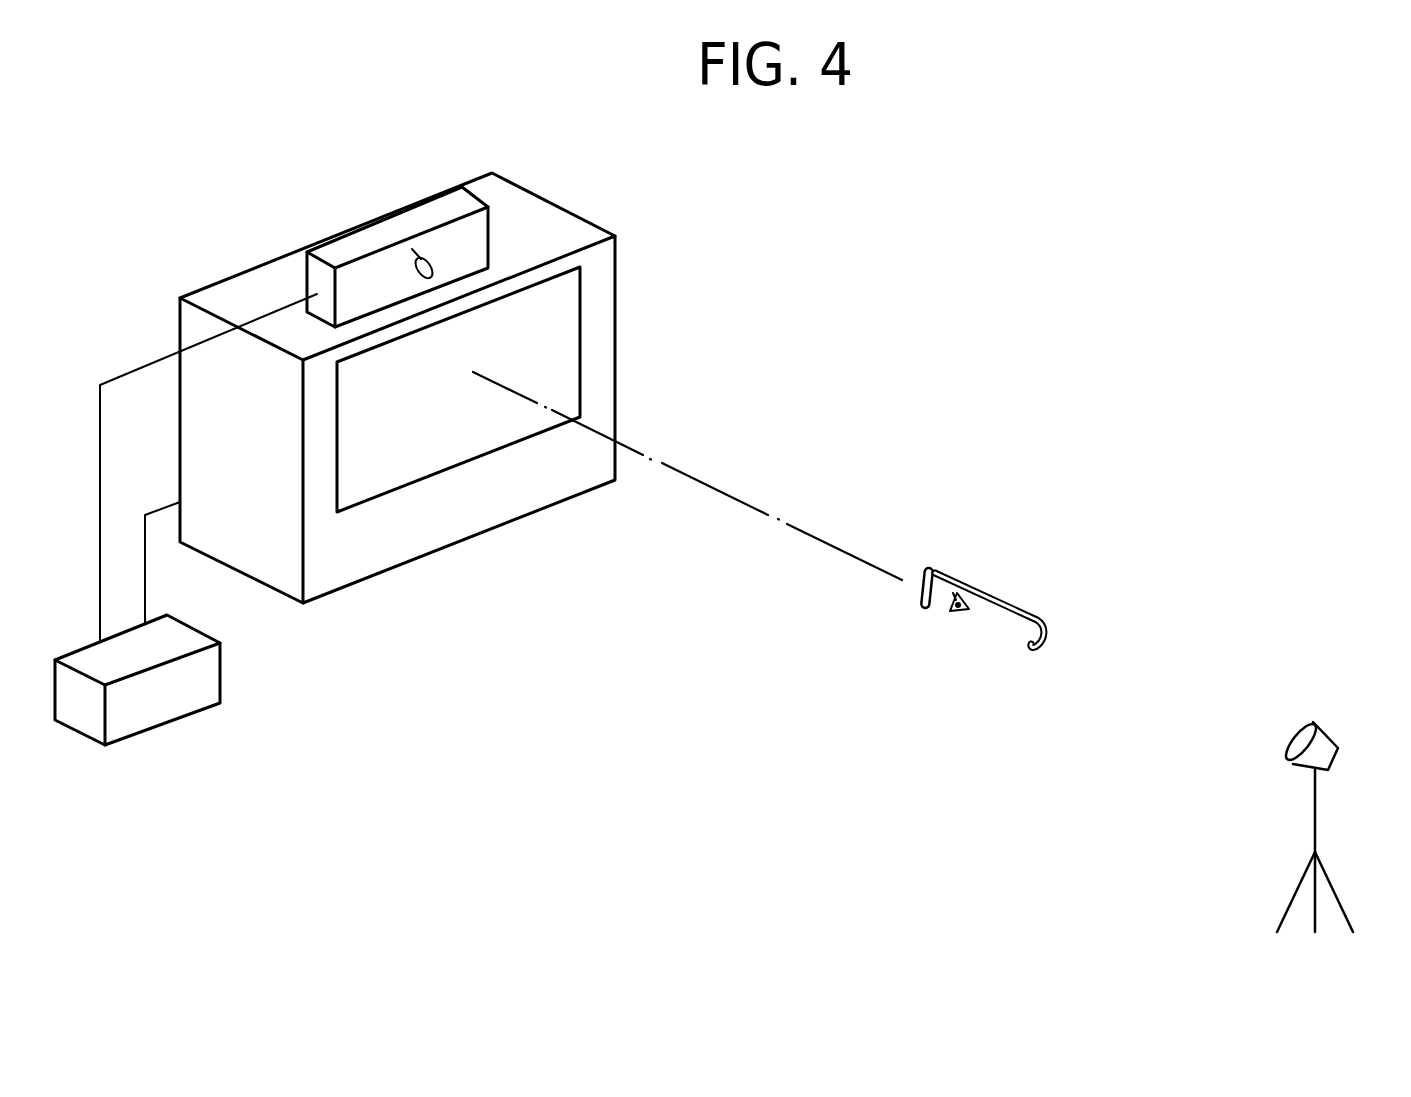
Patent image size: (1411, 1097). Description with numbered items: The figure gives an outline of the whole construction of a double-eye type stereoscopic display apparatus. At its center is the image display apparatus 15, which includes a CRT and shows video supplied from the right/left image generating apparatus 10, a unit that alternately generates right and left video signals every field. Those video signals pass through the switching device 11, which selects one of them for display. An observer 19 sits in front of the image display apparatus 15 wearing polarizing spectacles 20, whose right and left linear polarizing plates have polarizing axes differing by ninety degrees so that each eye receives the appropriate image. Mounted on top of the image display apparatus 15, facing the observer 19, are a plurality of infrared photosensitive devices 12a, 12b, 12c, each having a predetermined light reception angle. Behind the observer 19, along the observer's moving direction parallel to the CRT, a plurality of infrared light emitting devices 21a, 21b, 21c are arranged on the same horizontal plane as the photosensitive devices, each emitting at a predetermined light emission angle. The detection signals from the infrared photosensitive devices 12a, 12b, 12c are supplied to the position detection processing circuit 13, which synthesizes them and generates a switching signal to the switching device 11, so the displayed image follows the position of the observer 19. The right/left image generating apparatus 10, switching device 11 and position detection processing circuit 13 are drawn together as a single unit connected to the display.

The right/left image generating apparatus 10 is at (186, 555).
The switching device 11 is at (186, 555).
The position detection processing circuit 13 is at (93, 735).
The infrared photosensitive device 12a is at (397, 217).
The infrared photosensitive device 12b is at (397, 217).
The infrared photosensitive device 12c is at (437, 200).
The image display apparatus 15 is at (593, 227).
The observer 19 is at (960, 613).
The polarizing spectacles 20 is at (947, 572).
The infrared light emitting device 21a is at (1335, 786).
The infrared light emitting device 21b is at (1335, 786).
The infrared light emitting device 21c is at (1318, 723).